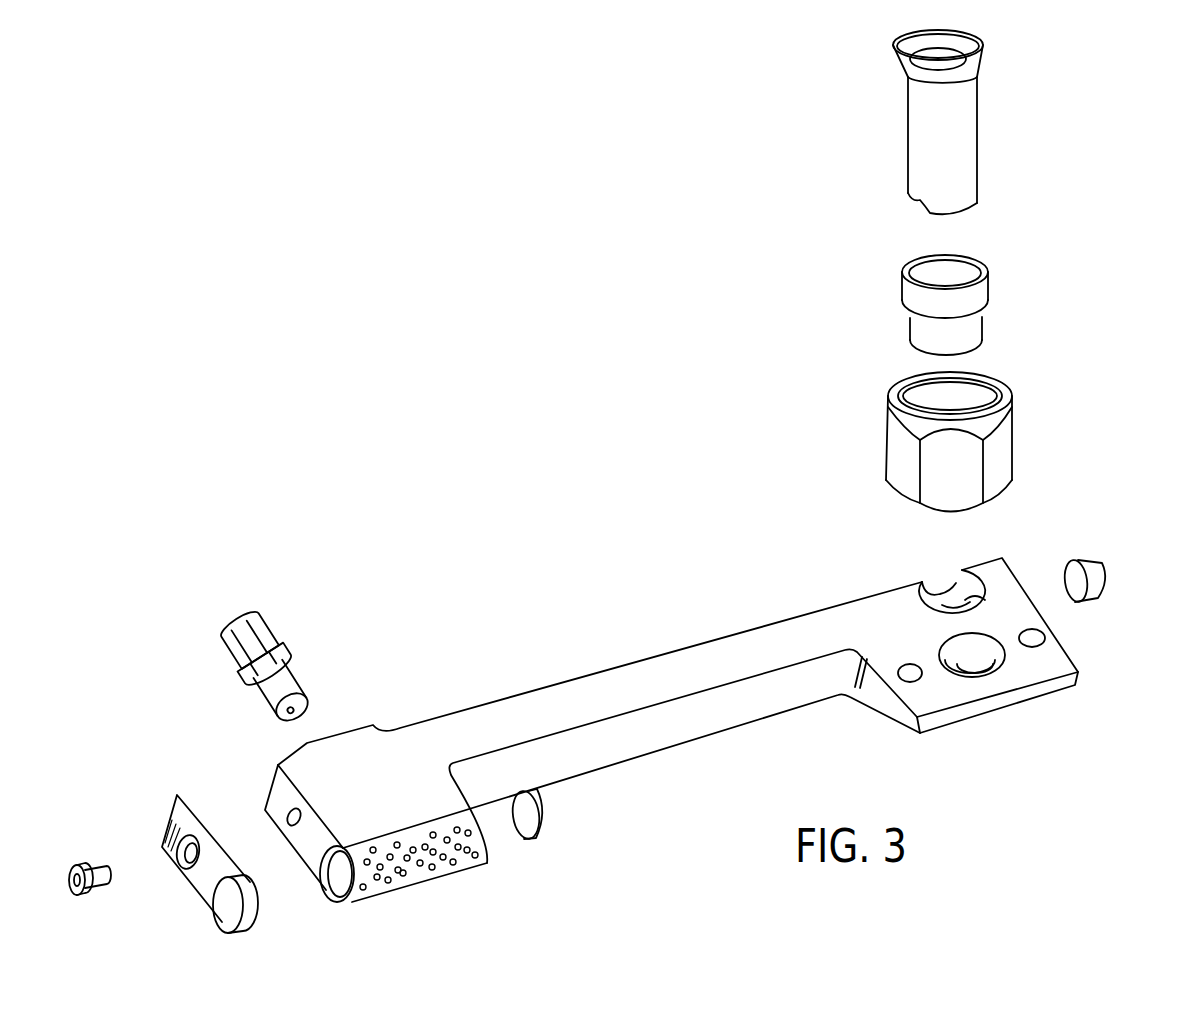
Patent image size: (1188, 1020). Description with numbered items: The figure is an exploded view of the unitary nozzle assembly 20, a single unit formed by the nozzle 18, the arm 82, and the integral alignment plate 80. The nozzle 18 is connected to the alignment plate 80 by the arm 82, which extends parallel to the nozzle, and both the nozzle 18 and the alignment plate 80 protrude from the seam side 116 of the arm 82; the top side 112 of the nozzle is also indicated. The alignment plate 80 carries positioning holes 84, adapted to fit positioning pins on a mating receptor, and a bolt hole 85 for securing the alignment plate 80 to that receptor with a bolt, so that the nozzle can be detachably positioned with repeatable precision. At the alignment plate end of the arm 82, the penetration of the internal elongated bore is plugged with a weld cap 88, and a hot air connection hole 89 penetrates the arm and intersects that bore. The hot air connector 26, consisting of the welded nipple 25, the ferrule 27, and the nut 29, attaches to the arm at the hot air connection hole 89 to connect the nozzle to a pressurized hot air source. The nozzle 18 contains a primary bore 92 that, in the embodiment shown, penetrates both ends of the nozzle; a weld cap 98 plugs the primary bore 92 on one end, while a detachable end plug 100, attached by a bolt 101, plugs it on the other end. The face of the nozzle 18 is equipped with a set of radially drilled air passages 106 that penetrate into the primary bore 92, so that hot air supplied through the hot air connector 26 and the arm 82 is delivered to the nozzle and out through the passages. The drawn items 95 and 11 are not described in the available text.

The unitary nozzle assembly 20 is at (658, 592).
The welded nipple 25 is at (980, 134).
The hot air connector 26 is at (884, 176).
The ferrule 27 is at (993, 296).
The nut 29 is at (1018, 437).
The alignment plate 80 is at (1078, 677).
The arm 82 is at (741, 727).
The positioning holes 84 is at (1033, 645).
The bolt hole 85 is at (975, 668).
The weld cap 88 is at (1106, 567).
The hot air connection hole 89 is at (953, 590).
The primary bore 92 is at (334, 900).
The fitting 95 is at (299, 665).
The weld cap 98 is at (541, 834).
The detachable end plug 100 is at (205, 906).
The bolt 101 is at (91, 860).
The radially drilled air passages 106 is at (410, 876).
The port 11 is at (292, 815).
The nozzle 18 is at (485, 862).
The top side 112 is at (594, 692).
The seam side 116 is at (608, 745).